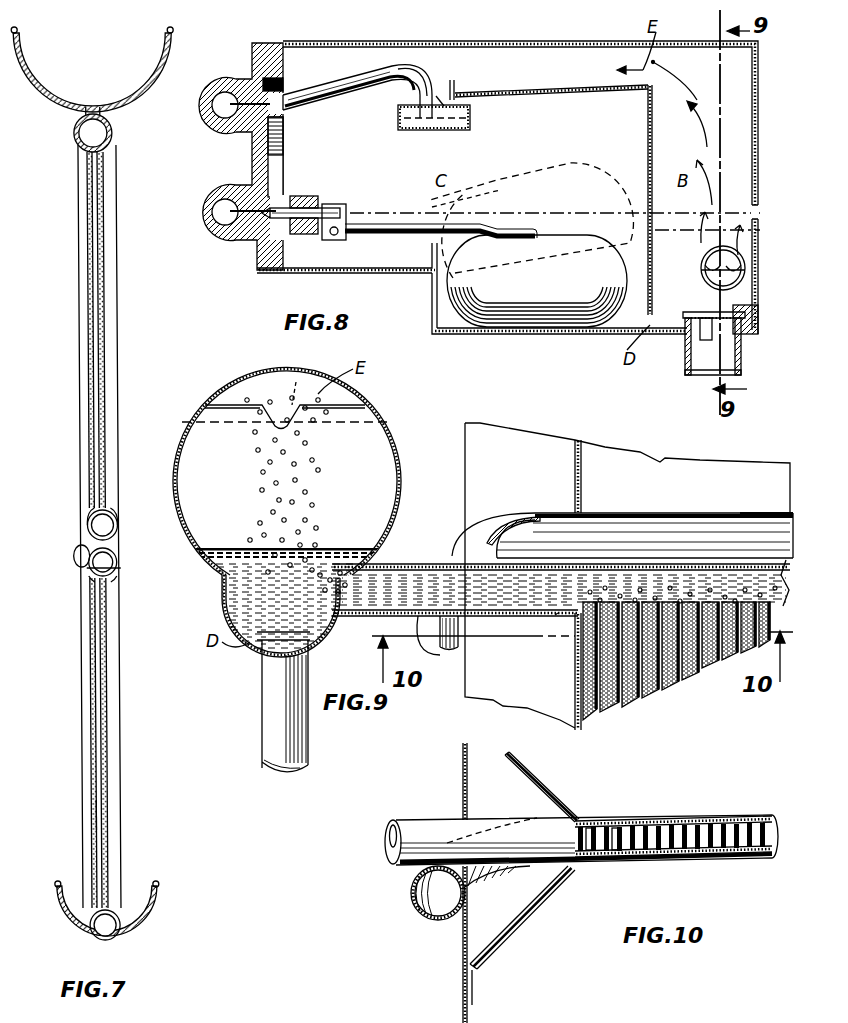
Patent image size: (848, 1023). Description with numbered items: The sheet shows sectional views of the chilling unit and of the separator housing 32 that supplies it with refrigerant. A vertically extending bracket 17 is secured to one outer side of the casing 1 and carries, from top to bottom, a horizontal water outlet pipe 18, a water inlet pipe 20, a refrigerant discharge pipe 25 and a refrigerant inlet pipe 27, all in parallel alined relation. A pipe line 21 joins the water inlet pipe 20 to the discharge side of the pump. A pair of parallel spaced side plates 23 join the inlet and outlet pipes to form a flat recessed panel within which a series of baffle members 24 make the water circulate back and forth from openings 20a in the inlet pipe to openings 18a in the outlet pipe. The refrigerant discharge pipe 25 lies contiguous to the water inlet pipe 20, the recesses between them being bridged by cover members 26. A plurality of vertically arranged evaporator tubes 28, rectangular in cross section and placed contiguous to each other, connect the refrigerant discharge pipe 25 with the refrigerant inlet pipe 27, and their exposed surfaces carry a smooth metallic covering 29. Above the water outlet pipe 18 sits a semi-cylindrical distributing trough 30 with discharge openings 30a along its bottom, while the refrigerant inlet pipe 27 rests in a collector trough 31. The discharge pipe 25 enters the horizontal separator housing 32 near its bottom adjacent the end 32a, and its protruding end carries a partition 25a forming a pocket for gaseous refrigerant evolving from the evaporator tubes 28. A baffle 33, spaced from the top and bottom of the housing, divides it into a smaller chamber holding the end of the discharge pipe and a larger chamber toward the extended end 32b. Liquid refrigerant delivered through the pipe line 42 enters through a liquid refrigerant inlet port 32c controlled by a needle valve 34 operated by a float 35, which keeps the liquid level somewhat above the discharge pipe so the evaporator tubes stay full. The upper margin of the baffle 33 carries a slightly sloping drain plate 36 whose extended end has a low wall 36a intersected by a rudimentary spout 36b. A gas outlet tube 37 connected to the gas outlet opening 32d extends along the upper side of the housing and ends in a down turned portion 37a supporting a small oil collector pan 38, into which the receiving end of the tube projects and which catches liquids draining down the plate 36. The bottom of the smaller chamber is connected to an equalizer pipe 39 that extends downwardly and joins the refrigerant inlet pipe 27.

In FIG. 10, the casing 1 is at (463, 773).
In FIG. 9, the bracket 17 is at (535, 453).
In FIG. 10, the bracket 17 is at (537, 900).
In FIG. 7, the water outlet pipe 18 is at (112, 126).
In FIG. 7, the openings 18a is at (104, 178).
In FIG. 7, the water inlet pipe 20 is at (114, 517).
In FIG. 9, the water inlet pipe 20 is at (640, 543).
In FIG. 9, the openings 20a is at (725, 505).
In FIG. 9, the pipe line 21 is at (458, 644).
In FIG. 10, the pipe line 21 is at (465, 898).
In FIG. 9, the side plates 23 is at (692, 480).
In FIG. 7, the baffle members 24 is at (95, 266).
In FIG. 7, the refrigerant discharge pipe 25 is at (88, 567).
In FIG. 8, the refrigerant discharge pipe 25 is at (746, 262).
In FIG. 9, the refrigerant discharge pipe 25 is at (562, 615).
In FIG. 10, the refrigerant discharge pipe 25 is at (675, 818).
In FIG. 8, the partition 25a is at (746, 272).
In FIG. 9, the partition 25a is at (365, 560).
In FIG. 7, the cover members 26 is at (116, 558).
In FIG. 7, the refrigerant inlet pipe 27 is at (110, 920).
In FIG. 7, the evaporator tubes 28 is at (106, 812).
In FIG. 9, the evaporator tubes 28 is at (656, 758).
In FIG. 10, the evaporator tubes 28 is at (652, 824).
In FIG. 10, the covering 29 is at (634, 818).
In FIG. 7, the distributing trough 30 is at (33, 82).
In FIG. 7, the discharge openings 30a is at (93, 108).
In FIG. 7, the collector trough 31 is at (152, 905).
In FIG. 8, the separator housing 32 is at (582, 60).
In FIG. 9, the separator housing 32 is at (362, 447).
In FIG. 8, the end 32a is at (758, 210).
In FIG. 8, the extended end 32b is at (252, 158).
In FIG. 8, the liquid refrigerant inlet port 32c is at (245, 232).
In FIG. 8, the gas outlet opening 32d is at (240, 100).
In FIG. 8, the baffle 33 is at (651, 143).
In FIG. 9, the baffle 33 is at (376, 432).
In FIG. 8, the needle valve 34 is at (305, 197).
In FIG. 8, the float 35 is at (565, 302).
In FIG. 8, the drain plate 36 is at (508, 95).
In FIG. 8, the low wall 36a is at (428, 95).
In FIG. 9, the low wall 36a is at (232, 405).
In FIG. 8, the rudimentary spout 36b is at (453, 92).
In FIG. 9, the rudimentary spout 36b is at (297, 405).
In FIG. 8, the gas outlet tube 37 is at (310, 96).
In FIG. 8, the down turned portion 37a is at (428, 93).
In FIG. 8, the oil collector pan 38 is at (470, 122).
In FIG. 8, the equalizer pipe 39 is at (688, 355).
In FIG. 9, the equalizer pipe 39 is at (278, 685).
In FIG. 8, the pipe line 42 is at (237, 222).